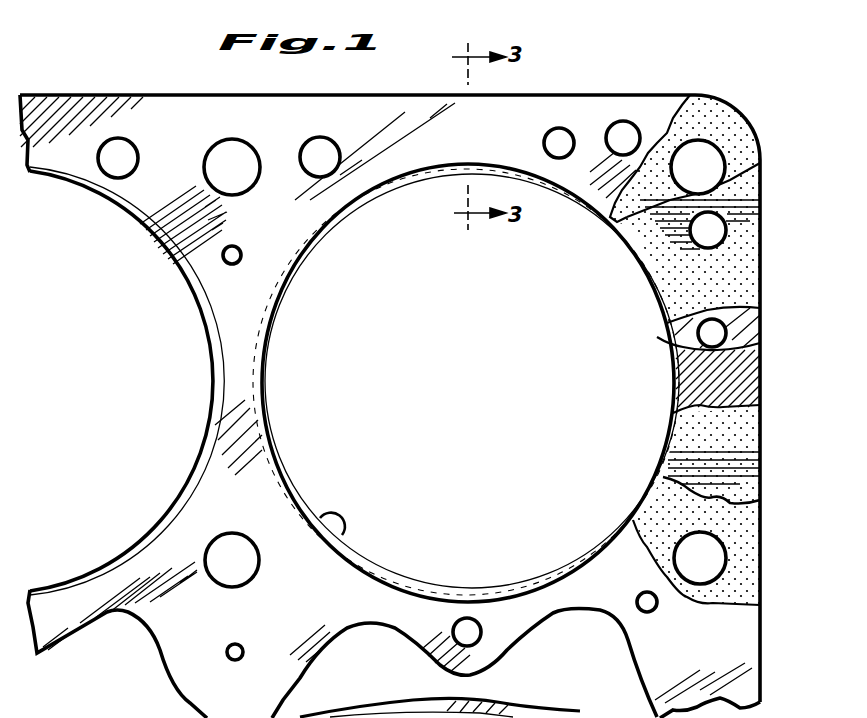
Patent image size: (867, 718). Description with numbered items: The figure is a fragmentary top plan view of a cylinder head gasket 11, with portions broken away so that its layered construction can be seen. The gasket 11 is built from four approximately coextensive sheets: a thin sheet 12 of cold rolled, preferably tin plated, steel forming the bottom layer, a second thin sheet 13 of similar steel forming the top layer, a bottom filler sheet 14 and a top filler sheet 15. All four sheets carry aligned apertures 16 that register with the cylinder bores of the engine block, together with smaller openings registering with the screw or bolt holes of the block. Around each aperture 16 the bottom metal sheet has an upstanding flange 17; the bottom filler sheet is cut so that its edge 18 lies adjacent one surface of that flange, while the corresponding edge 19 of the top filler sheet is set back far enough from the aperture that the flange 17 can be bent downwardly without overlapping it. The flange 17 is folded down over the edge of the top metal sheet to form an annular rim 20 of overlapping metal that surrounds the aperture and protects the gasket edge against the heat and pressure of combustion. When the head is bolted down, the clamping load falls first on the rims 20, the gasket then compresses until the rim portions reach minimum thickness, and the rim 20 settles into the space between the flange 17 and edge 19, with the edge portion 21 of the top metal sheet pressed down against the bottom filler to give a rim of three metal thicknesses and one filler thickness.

The gasket 11 is at (748, 122).
The thin sheet of cold rolled steel 12 is at (687, 388).
The second thin sheet 13 is at (235, 380).
The bottom filler sheet 14 is at (665, 320).
The top filler sheet 15 is at (663, 500).
The aperture 16 is at (332, 545).
The upstanding flange 17 is at (645, 277).
The edge of bottom filler sheet 18 is at (752, 350).
The edge of top filler sheet 19 is at (685, 204).
The annular rim 20 is at (292, 487).
The edge portion of top metal sheet 21 is at (597, 210).